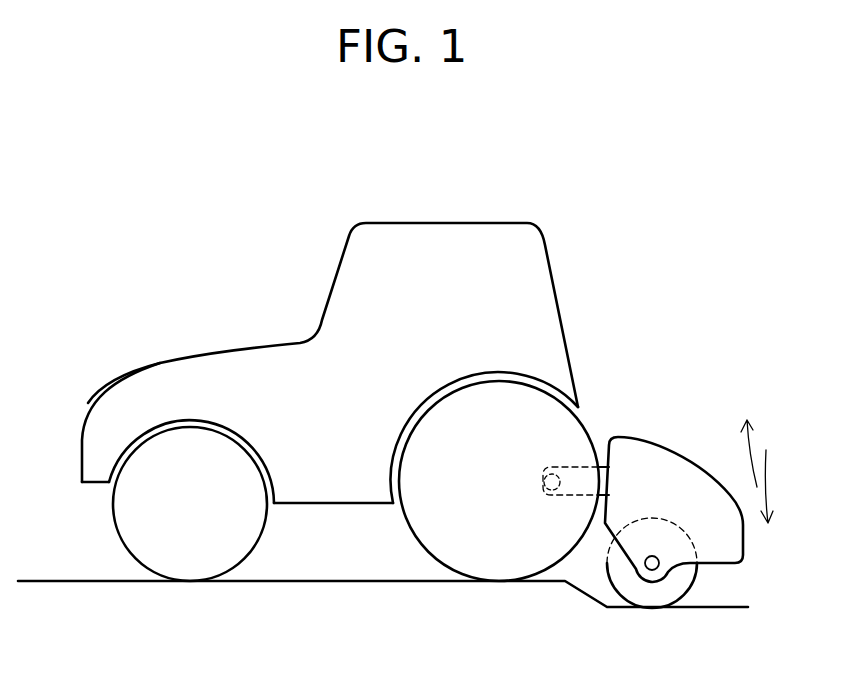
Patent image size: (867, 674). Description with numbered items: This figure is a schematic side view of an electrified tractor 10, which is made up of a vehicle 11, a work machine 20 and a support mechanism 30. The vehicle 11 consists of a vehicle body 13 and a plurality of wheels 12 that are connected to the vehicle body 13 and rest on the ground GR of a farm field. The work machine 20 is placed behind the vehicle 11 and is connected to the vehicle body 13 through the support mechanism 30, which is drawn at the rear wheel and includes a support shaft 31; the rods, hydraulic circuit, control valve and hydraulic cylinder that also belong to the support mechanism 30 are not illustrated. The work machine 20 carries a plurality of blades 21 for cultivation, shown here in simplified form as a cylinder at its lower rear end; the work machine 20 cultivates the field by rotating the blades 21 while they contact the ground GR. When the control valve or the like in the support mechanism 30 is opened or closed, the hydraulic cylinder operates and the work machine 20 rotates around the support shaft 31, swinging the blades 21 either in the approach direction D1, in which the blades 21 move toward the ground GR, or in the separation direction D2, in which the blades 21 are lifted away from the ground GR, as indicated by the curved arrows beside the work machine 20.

The electrified tractor 10 is at (332, 374).
The vehicle 11 is at (292, 309).
The wheels 12 is at (127, 522).
The vehicle body 13 is at (165, 370).
The work machine 20 is at (675, 486).
The blades 21 is at (678, 582).
The support mechanism 30 is at (547, 443).
The support shaft 31 is at (540, 455).
The ground GR is at (317, 578).
The approach direction D1 is at (770, 482).
The separation direction D2 is at (753, 445).